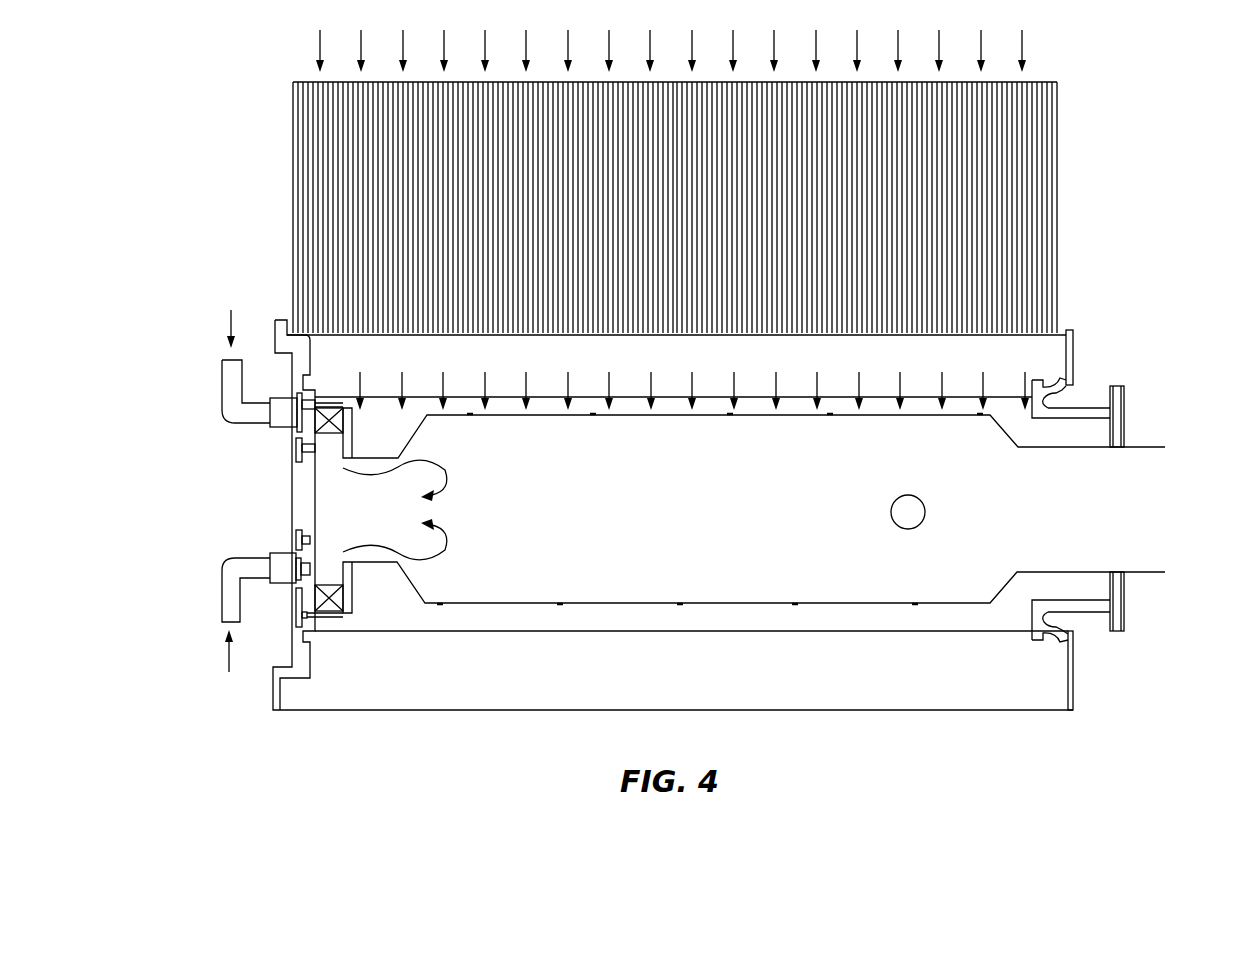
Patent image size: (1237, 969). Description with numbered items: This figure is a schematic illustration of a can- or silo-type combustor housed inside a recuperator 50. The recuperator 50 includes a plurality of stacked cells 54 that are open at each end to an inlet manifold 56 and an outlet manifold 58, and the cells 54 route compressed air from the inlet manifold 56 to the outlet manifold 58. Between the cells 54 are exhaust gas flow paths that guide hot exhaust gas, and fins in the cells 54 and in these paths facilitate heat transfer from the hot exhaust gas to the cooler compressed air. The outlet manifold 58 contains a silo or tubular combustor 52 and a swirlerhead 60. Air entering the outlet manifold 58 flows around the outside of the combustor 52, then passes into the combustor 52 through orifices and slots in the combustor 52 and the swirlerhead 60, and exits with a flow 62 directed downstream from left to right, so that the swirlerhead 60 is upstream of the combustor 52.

The recuperator 50 is at (203, 87).
The combustor 52 is at (711, 605).
The stacked cells 54 is at (673, 226).
The inlet manifold 56 is at (671, 39).
The outlet manifold 58 is at (692, 375).
The swirlerhead 60 is at (300, 492).
The flow 62 is at (1165, 509).